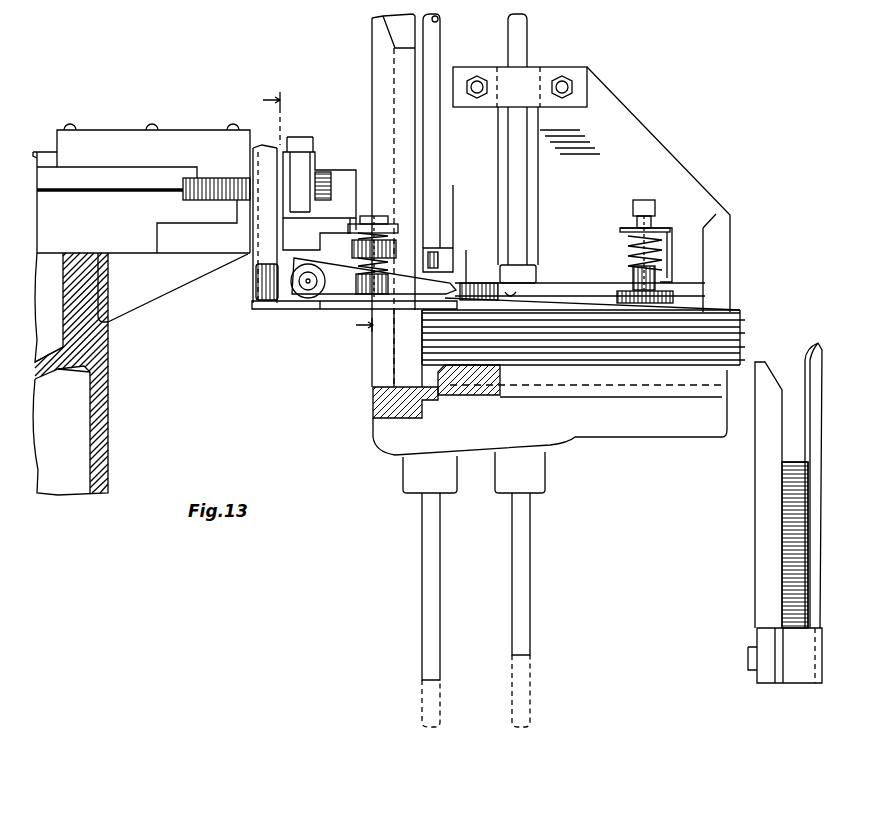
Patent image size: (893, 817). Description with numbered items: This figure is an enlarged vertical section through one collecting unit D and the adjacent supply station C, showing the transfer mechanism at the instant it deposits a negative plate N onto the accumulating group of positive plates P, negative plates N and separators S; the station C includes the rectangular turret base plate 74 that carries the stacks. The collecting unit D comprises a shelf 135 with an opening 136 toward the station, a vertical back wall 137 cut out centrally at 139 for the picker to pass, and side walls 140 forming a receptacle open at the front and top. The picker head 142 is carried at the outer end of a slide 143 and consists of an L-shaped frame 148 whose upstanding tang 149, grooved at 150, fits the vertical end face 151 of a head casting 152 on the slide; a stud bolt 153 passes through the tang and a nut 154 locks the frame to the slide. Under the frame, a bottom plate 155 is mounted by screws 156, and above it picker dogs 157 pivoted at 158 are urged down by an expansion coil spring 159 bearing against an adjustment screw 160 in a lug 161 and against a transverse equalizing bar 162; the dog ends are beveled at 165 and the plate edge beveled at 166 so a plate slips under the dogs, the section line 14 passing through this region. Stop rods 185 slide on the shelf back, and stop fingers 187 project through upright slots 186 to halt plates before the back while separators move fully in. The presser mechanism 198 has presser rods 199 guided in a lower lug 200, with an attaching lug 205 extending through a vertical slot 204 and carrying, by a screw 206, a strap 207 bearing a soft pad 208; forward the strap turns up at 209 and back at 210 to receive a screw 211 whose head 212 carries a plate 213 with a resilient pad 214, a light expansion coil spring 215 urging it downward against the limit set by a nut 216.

The section line 14 is at (318, 212).
The turret base plate 74 is at (796, 683).
The shelf 135 is at (470, 397).
The opening 136 is at (540, 397).
The back wall 137 is at (372, 66).
The cut-out 139 is at (402, 96).
The side walls 140 is at (628, 140).
The picker head 142 is at (285, 316).
The slide 143 is at (45, 165).
The L-shaped frame 148 is at (270, 309).
The tang portion 149 is at (283, 238).
The groove 150 is at (266, 142).
The vertical end face 151 is at (250, 138).
The head casting 152 is at (160, 135).
The stud bolt 153 is at (322, 180).
The nut 154 is at (292, 160).
The bottom plate 155 is at (325, 309).
The screws 156 is at (252, 266).
The picker dog 157 is at (373, 278).
The pivot 158 is at (308, 291).
The expansion coil spring 159 is at (392, 252).
The adjustment screw 160 is at (376, 216).
The lug 161 is at (390, 238).
The equalizing bar 162 is at (390, 290).
The beveled end 165 is at (411, 348).
The beveled edge 166 is at (468, 255).
The stop rods 185 is at (433, 44).
The upright slots 186 is at (445, 72).
The stop fingers 187 is at (498, 204).
The presser mechanism 198 is at (684, 226).
The presser rods 199 is at (522, 52).
The lower lug 200 is at (536, 482).
The vertical slot 204 is at (540, 180).
The attaching lug 205 is at (522, 268).
The screw 206 is at (520, 291).
The strap 207 is at (580, 282).
The pad 208 is at (480, 280).
The upturned portion 209 is at (705, 280).
The upper strap end 210 is at (622, 228).
The screw 211 is at (645, 200).
The screw head 212 is at (636, 272).
The plate 213 is at (666, 298).
The resilient pad 214 is at (700, 306).
The light expansion coil spring 215 is at (688, 240).
The nut 216 is at (660, 216).
The supply station C is at (752, 588).
The collecting unit D is at (697, 166).
The negative plate N is at (735, 306).
The positive plate P is at (744, 352).
The separator S is at (420, 348).